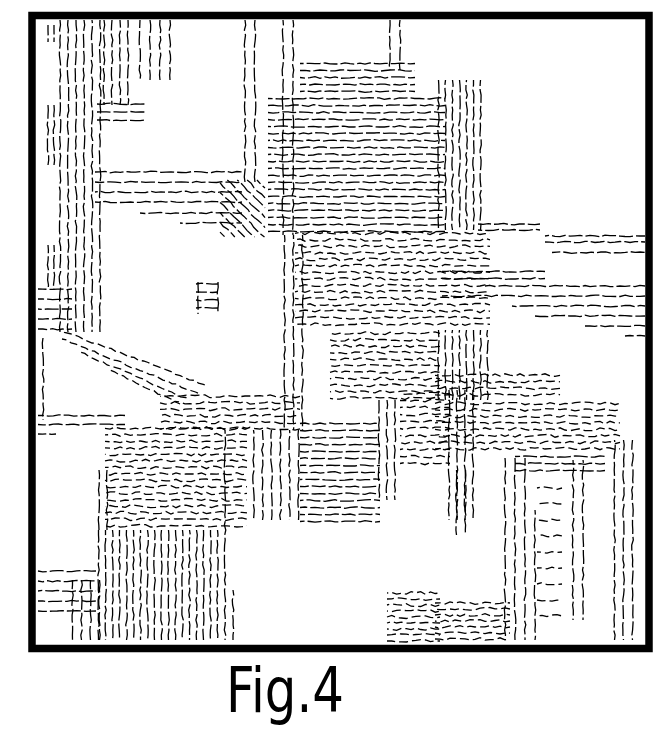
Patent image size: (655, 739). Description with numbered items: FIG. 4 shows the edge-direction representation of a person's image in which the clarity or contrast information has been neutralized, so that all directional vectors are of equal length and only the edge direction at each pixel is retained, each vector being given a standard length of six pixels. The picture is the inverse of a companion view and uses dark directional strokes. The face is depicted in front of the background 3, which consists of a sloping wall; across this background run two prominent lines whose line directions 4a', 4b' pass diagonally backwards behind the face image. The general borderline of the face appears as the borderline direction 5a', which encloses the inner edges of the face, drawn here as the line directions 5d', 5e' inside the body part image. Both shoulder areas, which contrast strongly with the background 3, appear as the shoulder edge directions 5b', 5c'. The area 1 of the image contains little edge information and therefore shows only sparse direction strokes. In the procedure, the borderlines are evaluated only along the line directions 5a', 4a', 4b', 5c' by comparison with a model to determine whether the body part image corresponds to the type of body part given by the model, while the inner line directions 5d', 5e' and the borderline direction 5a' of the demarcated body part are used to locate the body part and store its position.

The area of the image 1 is at (335, 331).
The background 3 is at (168, 242).
The line direction of background line 4a' is at (561, 206).
The line direction of background line 4b' is at (543, 262).
The borderline direction of the face 5a' is at (388, 148).
The shoulder edge direction 5b' is at (180, 428).
The shoulder edge direction 5c' is at (527, 411).
The inner line direction 5d' is at (335, 279).
The inner line direction 5e' is at (386, 378).